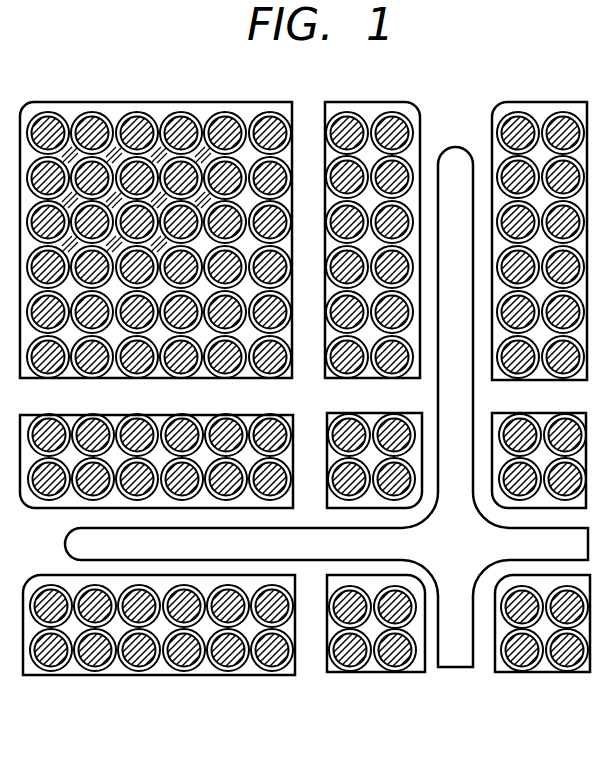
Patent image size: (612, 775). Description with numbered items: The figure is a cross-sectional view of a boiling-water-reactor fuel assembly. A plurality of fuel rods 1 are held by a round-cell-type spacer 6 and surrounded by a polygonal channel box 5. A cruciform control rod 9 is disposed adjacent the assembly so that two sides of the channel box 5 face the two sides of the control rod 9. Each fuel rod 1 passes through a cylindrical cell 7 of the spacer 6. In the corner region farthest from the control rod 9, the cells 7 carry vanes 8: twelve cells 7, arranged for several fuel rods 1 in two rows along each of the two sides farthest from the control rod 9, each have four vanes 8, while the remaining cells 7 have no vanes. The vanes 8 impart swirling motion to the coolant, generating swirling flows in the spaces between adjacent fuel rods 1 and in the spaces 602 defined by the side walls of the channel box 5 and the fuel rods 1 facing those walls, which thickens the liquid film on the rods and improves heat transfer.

The fuel rod 1 is at (412, 115).
The channel box 5 is at (279, 102).
The spacer 6 is at (359, 100).
The cell 7 is at (181, 112).
The vane 8 is at (121, 112).
The control rod 9 is at (455, 147).
The space 602 is at (61, 102).